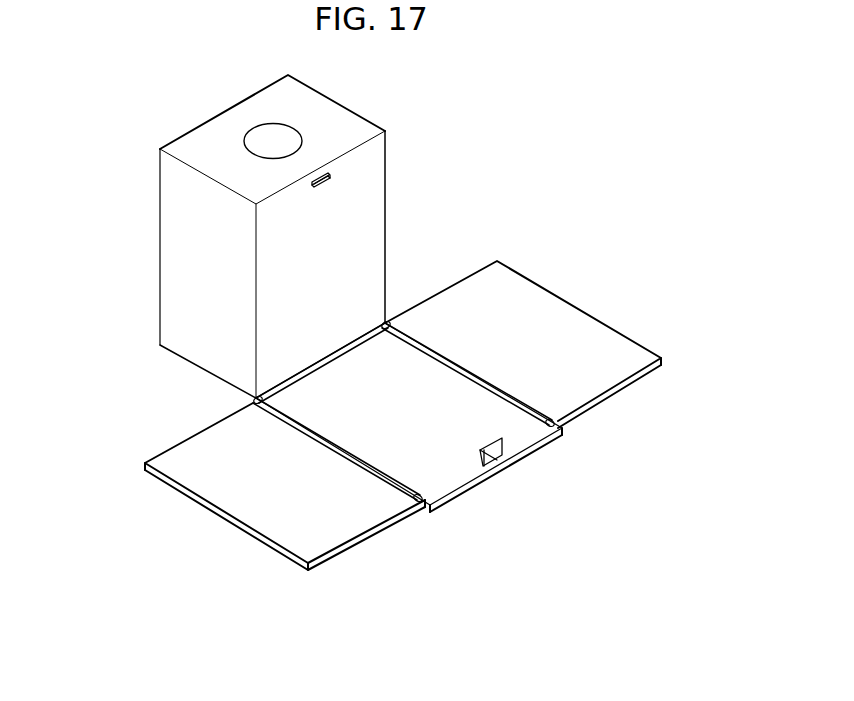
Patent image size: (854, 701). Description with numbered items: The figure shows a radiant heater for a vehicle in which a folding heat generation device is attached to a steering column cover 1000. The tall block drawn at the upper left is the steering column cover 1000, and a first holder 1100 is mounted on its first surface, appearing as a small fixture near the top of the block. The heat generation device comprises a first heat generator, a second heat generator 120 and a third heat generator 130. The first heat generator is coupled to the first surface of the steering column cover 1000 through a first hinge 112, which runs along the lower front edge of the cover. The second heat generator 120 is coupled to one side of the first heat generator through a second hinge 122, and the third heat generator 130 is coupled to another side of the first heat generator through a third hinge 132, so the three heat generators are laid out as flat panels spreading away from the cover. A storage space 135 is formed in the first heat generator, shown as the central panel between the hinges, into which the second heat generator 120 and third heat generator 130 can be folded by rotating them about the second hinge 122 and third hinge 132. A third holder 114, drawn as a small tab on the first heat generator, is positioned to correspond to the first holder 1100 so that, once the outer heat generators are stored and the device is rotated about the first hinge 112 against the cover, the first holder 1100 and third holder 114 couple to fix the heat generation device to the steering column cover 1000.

The steering column cover 1000 is at (195, 253).
The first holder 1100 is at (331, 178).
The first hinge 112 is at (255, 397).
The third holder 114 is at (500, 458).
The second heat generator 120 is at (255, 507).
The second hinge 122 is at (386, 473).
The third heat generator 130 is at (548, 312).
The third hinge 132 is at (520, 397).
The storage space 135 is at (405, 412).